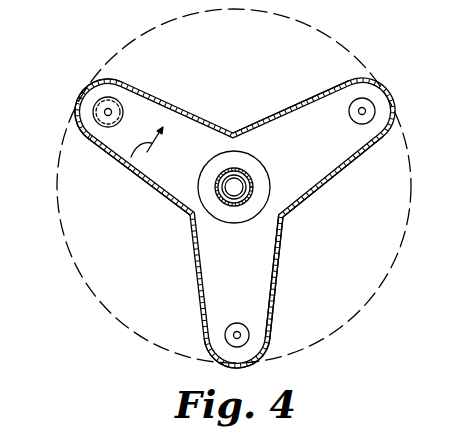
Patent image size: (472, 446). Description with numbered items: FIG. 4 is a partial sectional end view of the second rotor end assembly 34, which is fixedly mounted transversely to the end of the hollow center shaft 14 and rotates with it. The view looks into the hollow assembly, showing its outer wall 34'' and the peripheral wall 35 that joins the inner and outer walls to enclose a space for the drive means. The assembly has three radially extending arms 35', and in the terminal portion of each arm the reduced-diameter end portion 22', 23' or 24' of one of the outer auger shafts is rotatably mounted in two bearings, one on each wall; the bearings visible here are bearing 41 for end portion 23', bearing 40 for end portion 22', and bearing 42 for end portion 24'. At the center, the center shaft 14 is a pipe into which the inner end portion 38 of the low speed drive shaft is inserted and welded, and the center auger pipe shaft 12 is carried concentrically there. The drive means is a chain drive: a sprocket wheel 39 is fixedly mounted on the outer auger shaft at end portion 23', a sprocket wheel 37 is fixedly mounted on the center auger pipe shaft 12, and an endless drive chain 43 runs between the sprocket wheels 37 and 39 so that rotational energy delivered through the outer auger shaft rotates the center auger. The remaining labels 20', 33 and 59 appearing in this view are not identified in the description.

The circular envelope / housing outline 20' is at (234, 186).
The end portion of reduced diameter 23' is at (76, 101).
The sprocket wheel 39 is at (110, 97).
The bearing 41 is at (104, 112).
The arm of rotor plate 33 is at (125, 170).
The endless drive chain 43 is at (168, 189).
The hub 59 is at (213, 167).
The center shaft 14 is at (243, 172).
The center auger pipe shaft 12 is at (253, 190).
The inner end portion of low speed drive shaft 38 is at (233, 190).
The arm 35' is at (290, 101).
The end portion of reduced diameter 22' is at (335, 131).
The bearing 40 is at (372, 122).
The second rotor end assembly 34 is at (333, 191).
The sprocket wheel 37 is at (278, 238).
The outer wall 34'' is at (299, 276).
The peripheral wall 35 is at (261, 328).
The bearing 42 is at (237, 323).
The end portion of reduced diameter 24' is at (189, 324).